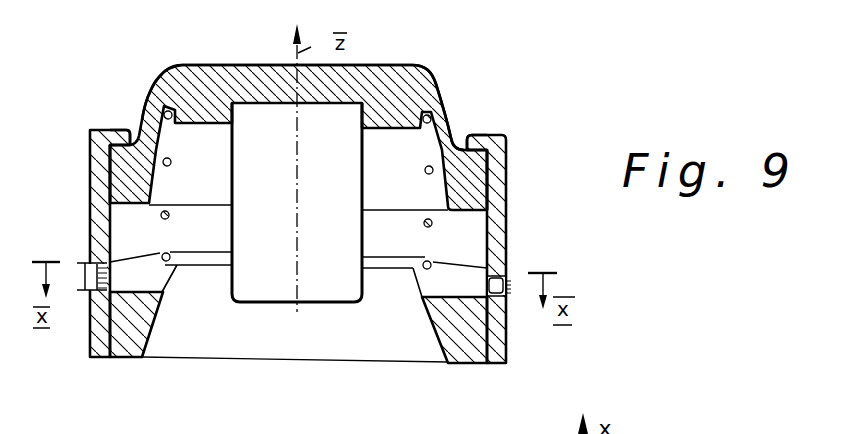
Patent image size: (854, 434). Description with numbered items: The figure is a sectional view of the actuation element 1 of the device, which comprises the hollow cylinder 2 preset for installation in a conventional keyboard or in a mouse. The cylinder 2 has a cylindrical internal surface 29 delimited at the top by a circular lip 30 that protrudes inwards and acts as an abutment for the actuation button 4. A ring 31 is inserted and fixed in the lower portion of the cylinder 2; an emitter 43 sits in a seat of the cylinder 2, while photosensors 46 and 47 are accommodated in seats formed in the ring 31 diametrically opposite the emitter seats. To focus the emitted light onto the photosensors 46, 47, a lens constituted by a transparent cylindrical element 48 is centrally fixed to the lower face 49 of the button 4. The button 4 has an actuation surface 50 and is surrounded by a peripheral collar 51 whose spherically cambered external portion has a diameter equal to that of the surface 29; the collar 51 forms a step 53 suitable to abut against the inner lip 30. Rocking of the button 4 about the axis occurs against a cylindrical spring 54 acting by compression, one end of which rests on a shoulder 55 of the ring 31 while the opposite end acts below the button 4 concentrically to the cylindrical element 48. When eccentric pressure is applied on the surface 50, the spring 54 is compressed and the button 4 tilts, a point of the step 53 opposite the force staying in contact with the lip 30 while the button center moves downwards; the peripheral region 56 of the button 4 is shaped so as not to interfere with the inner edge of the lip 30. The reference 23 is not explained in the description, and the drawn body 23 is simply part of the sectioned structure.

The actuation element 1 is at (606, 131).
The hollow cylinder 2 is at (90, 202).
The actuation button 4 is at (450, 86).
The dome wall 23 is at (415, 87).
The cylindrical internal surface 29 is at (483, 230).
The circular lip 30 is at (478, 138).
The ring 31 is at (132, 333).
The emitter 43 is at (500, 298).
The photosensor 46 is at (505, 420).
The photosensor 47 is at (90, 306).
The cylindrical element 48 is at (258, 127).
The lower face 49 is at (175, 72).
The actuation surface 50 is at (398, 60).
The peripheral collar 51 is at (97, 167).
The step 53 is at (110, 157).
The cylindrical spring 54 is at (152, 103).
The shoulder 55 is at (163, 277).
The peripheral region 56 is at (158, 86).